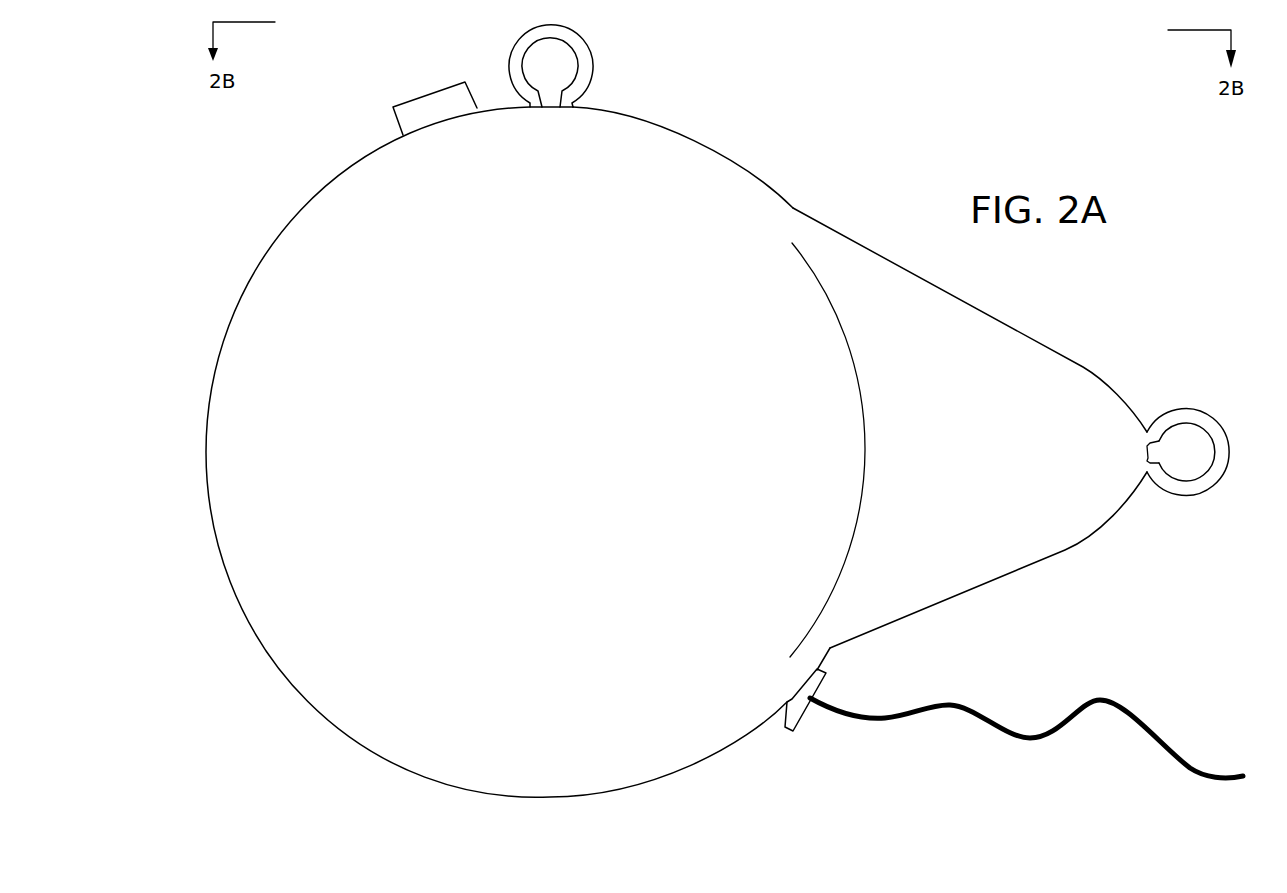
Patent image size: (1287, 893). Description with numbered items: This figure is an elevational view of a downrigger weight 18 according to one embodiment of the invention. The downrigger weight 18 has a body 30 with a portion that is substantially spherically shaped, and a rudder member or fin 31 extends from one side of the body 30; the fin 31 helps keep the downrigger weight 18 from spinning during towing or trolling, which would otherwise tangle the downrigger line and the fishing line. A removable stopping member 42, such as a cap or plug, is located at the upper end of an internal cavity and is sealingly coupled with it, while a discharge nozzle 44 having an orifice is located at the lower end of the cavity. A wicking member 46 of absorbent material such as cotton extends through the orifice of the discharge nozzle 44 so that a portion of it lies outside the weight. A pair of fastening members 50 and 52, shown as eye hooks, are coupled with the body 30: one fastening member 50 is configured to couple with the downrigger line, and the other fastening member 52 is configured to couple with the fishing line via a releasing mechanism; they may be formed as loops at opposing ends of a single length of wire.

The downrigger weight 18 is at (873, 158).
The body 30 is at (717, 147).
The fin 31 is at (1007, 325).
The removable stopping member 42 is at (420, 97).
The discharge nozzle 44 is at (820, 688).
The wicking member 46 is at (992, 713).
The fastening member 50 is at (593, 57).
The fastening member 52 is at (1182, 410).